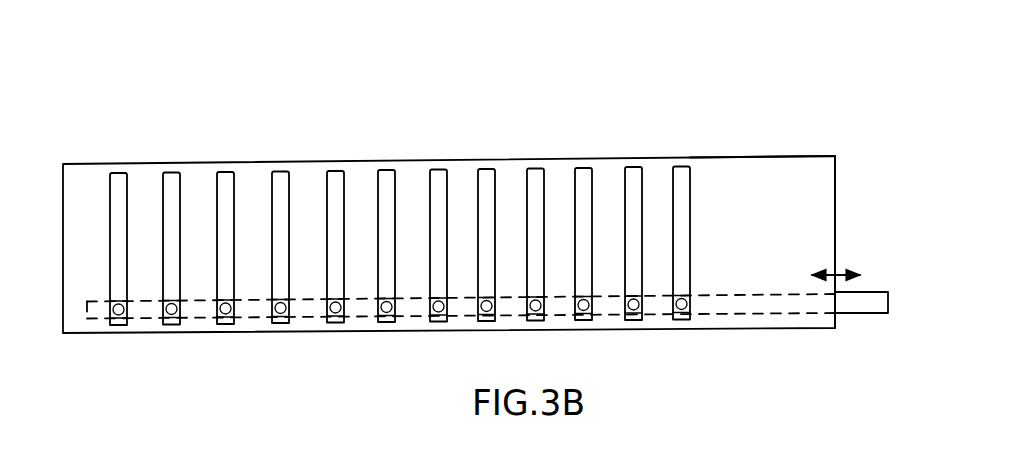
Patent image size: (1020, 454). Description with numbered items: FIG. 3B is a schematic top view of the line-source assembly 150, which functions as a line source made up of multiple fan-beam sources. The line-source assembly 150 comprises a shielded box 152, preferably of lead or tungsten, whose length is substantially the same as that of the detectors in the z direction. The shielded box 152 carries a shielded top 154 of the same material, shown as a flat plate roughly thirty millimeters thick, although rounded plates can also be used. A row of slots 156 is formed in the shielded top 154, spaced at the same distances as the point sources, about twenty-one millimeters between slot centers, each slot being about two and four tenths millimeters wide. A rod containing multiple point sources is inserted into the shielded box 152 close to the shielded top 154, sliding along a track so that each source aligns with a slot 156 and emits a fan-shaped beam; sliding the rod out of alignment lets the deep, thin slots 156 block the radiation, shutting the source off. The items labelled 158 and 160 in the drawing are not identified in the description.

The line-source assembly 150 is at (738, 86).
The shielded box 152 is at (643, 157).
The shielded top 154 is at (738, 162).
The slots 156 is at (574, 184).
The actuator bar 158 is at (399, 337).
The finger guide slots 160 is at (398, 160).